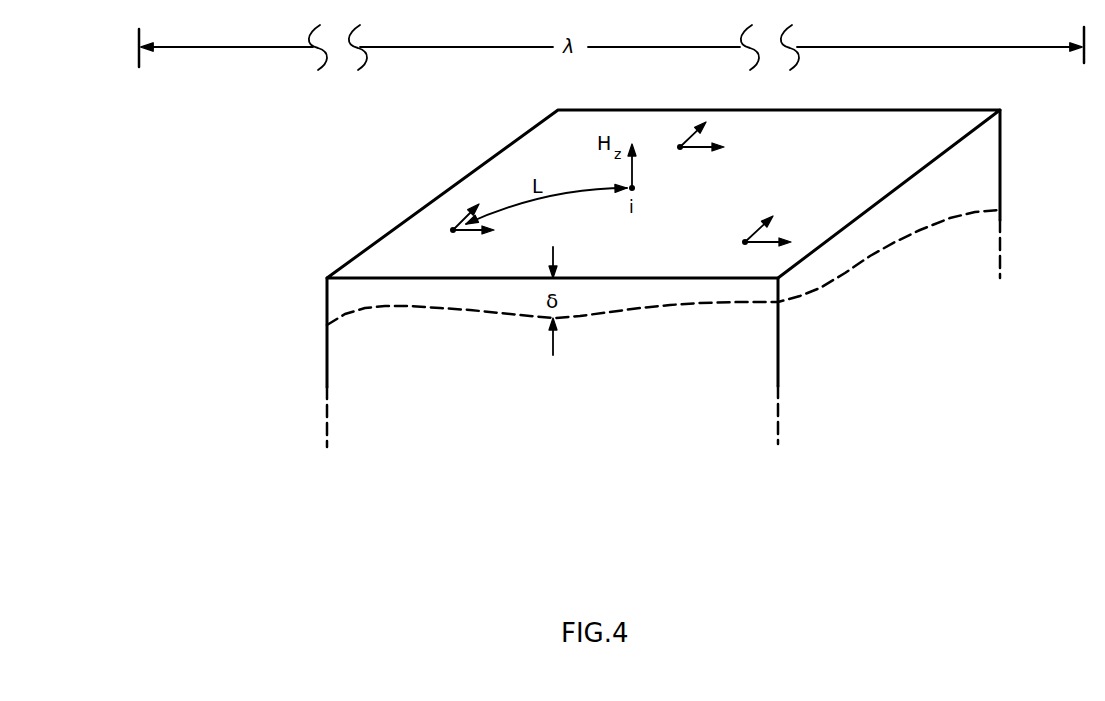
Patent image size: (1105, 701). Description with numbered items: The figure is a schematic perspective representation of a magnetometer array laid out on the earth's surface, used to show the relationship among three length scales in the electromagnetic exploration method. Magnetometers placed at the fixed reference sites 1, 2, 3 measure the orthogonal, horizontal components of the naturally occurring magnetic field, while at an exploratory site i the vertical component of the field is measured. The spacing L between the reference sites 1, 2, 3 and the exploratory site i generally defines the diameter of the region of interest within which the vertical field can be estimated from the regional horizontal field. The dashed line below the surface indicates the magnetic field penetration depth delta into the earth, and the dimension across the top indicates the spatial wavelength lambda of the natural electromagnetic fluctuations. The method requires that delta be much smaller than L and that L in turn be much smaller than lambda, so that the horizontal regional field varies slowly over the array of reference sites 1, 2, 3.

The reference site 1 is at (470, 231).
The reference site 2 is at (766, 244).
The reference site 3 is at (700, 149).